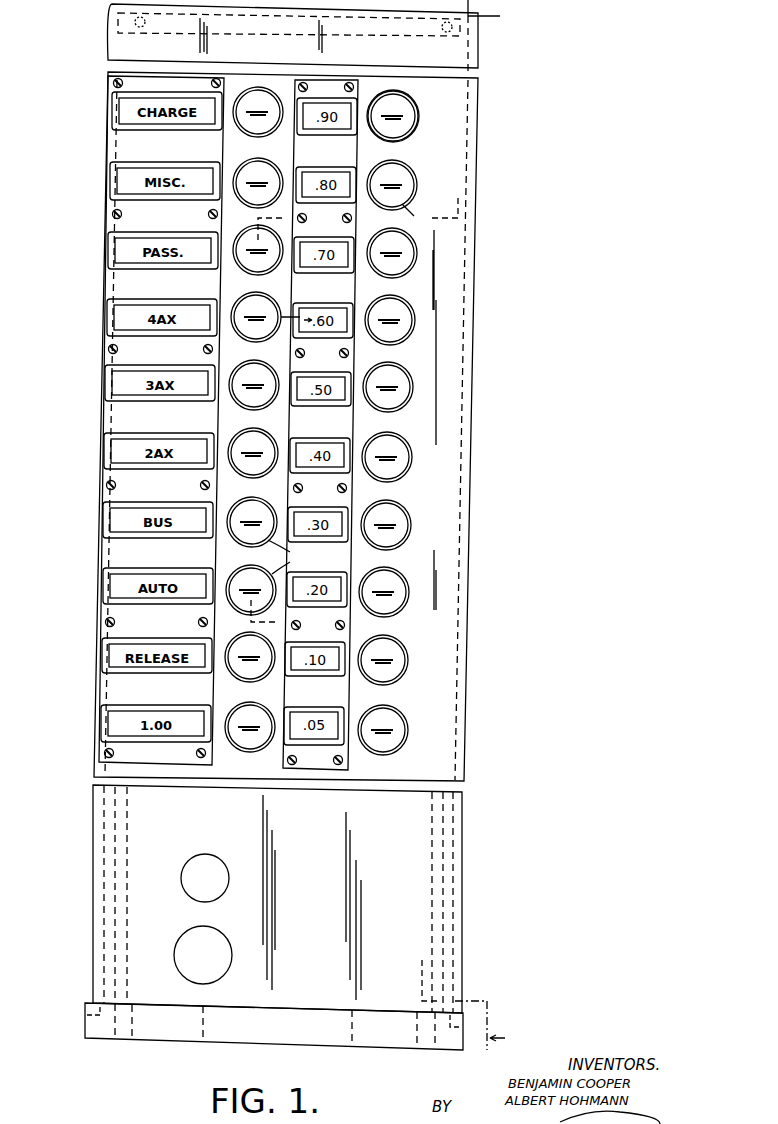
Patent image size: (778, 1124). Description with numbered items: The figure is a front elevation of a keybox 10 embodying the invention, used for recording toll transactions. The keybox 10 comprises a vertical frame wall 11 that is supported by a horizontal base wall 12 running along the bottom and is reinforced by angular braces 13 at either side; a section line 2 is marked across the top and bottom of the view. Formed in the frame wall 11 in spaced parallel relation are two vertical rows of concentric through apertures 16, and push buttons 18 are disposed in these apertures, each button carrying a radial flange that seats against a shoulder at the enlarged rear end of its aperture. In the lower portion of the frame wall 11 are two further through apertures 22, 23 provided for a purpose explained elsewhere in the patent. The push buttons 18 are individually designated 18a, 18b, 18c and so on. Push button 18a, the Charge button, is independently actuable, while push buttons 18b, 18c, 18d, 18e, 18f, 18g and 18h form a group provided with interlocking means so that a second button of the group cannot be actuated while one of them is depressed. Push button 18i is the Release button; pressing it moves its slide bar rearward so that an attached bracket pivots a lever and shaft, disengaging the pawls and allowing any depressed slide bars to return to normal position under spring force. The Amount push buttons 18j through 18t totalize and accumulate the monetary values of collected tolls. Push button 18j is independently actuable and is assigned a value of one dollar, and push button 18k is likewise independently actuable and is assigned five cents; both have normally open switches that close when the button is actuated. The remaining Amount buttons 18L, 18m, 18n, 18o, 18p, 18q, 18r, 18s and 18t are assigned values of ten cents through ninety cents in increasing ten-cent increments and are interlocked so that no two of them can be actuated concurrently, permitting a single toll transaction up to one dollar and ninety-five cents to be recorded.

The section line 2- 2 is at (488, 526).
The keybox 10 is at (501, 362).
The vertical frame wall 11 is at (437, 762).
The horizontal base wall 12 is at (96, 1027).
The angular braces 13 is at (115, 905).
The through apertures 16 is at (363, 385).
The push buttons 18 is at (425, 140).
The Charge button 18a is at (258, 90).
The push button 18b is at (258, 160).
The push button 18c is at (258, 228).
The push button 18d is at (256, 294).
The push button 18e is at (254, 362).
The push button 18f is at (253, 430).
The push button 18g is at (252, 499).
The push button 18h is at (251, 567).
The Release button 18i is at (249, 636).
The Amount push button 18j is at (249, 706).
The Amount push button 18k is at (405, 728).
The Amount push button 18L is at (400, 675).
The Amount push button 18m is at (398, 582).
The Amount push button 18n is at (405, 536).
The Amount push button 18o is at (405, 464).
The Amount push button 18p is at (404, 396).
The Amount push button 18q is at (422, 299).
The Amount push button 18r is at (413, 258).
The Amount push button 18s is at (409, 195).
The Amount push button 18t is at (412, 118).
The through aperture 22 is at (216, 868).
The through aperture 23 is at (218, 946).